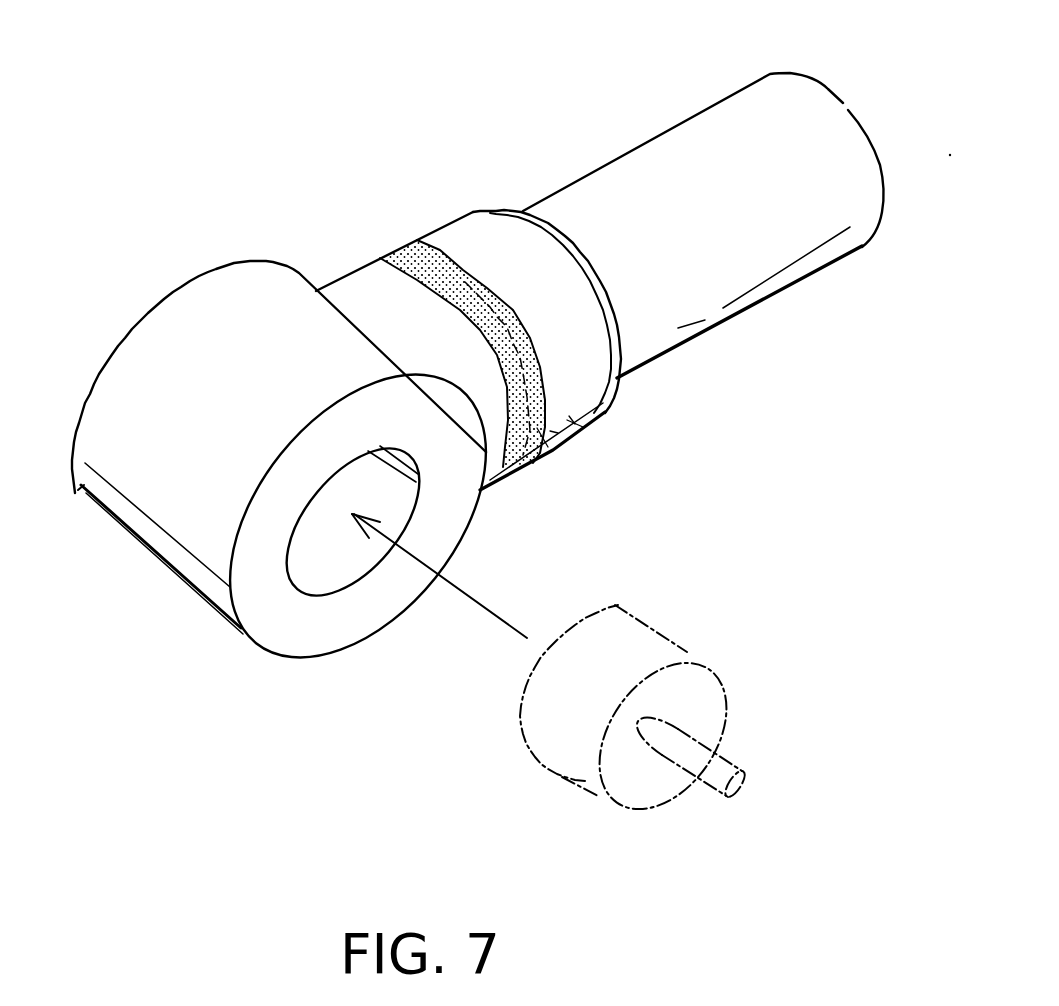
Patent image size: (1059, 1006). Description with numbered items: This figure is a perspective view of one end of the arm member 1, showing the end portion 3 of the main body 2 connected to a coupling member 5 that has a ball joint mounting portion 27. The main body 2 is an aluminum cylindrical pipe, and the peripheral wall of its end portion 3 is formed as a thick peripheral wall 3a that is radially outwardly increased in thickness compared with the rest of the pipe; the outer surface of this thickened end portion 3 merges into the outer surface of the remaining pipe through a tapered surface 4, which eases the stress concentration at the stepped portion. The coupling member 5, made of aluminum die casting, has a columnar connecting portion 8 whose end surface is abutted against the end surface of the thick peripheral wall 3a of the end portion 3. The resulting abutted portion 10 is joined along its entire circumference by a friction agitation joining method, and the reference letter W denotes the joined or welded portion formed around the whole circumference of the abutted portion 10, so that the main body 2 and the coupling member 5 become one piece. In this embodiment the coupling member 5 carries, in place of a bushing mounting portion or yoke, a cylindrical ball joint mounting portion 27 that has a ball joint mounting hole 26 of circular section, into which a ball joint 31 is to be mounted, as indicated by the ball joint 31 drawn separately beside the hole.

The arm member 1 is at (438, 93).
The main body 2 is at (703, 150).
The end portion 3 is at (486, 250).
The thick peripheral wall 3a is at (572, 418).
The tapered surface 4 is at (612, 332).
The coupling member 5 is at (197, 302).
The connecting portion 8 is at (378, 318).
The abutted portion 10 is at (465, 282).
The ball joint mounting hole 26 is at (325, 547).
The ball joint mounting portion 27 is at (160, 517).
The ball joint 31 is at (640, 638).
The joined or welded portion W is at (543, 434).